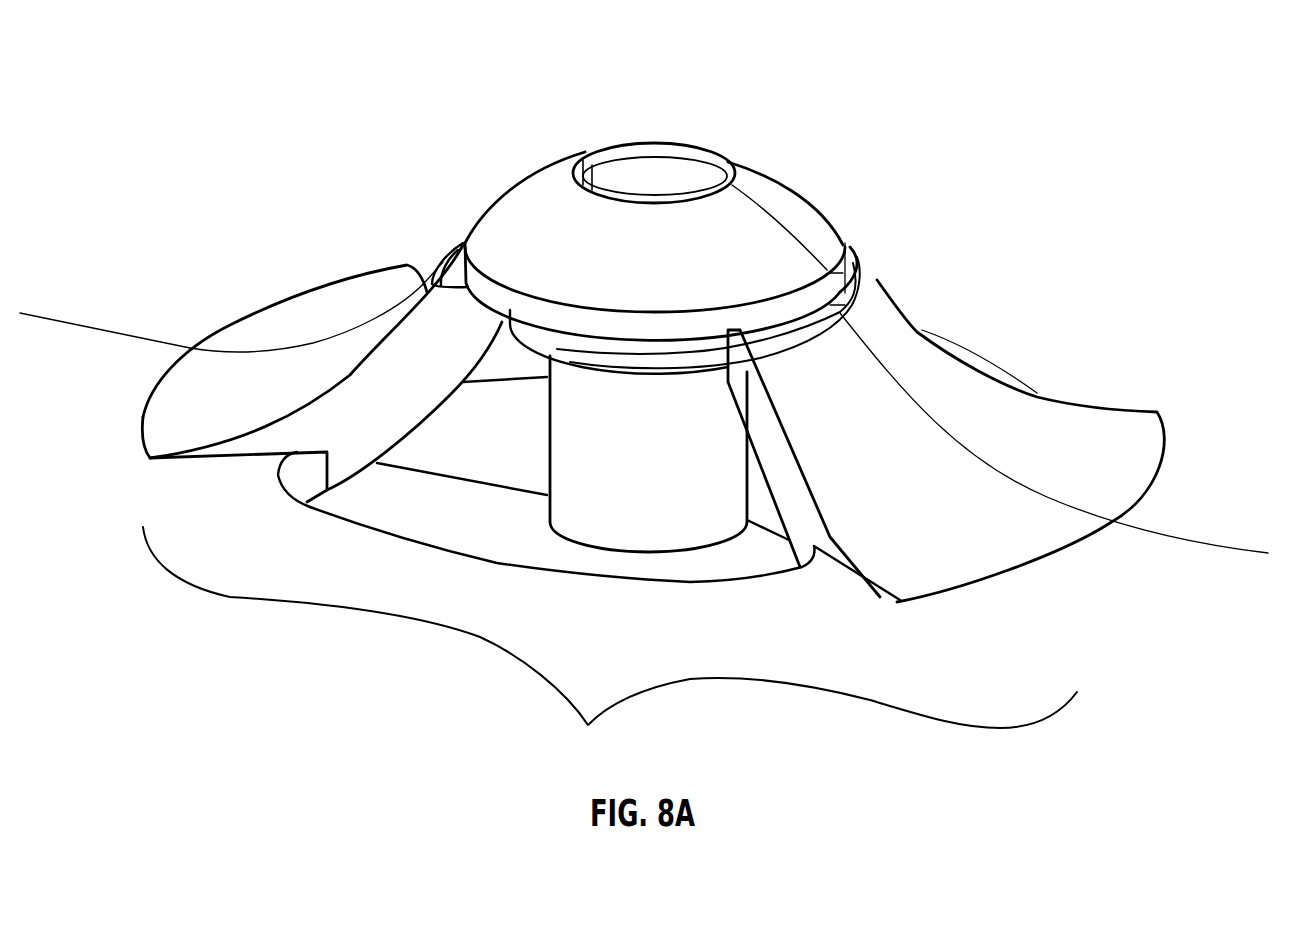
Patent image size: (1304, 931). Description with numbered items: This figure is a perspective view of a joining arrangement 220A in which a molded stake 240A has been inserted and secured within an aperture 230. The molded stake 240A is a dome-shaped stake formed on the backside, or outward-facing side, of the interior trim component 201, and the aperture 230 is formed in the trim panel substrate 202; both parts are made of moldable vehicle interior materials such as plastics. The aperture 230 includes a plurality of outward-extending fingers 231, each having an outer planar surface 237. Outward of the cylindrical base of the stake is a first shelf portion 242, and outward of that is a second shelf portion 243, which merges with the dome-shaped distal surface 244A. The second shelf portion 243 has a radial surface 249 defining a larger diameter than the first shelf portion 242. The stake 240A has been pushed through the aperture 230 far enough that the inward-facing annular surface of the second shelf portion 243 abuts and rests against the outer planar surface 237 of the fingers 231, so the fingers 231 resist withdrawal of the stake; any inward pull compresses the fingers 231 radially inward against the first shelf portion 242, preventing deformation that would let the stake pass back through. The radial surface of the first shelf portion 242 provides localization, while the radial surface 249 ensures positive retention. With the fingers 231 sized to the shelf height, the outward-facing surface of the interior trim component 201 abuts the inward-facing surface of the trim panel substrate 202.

The interior trim component 201 is at (462, 526).
The trim panel substrate 202 is at (1255, 592).
The joining arrangement 220A is at (653, 322).
The aperture 230 is at (610, 651).
The fingers 231 is at (353, 308).
The outer planar surface 237 is at (458, 253).
The molded stake 240A is at (714, 329).
The first shelf portion 242 is at (666, 382).
The second shelf portion 243 is at (612, 340).
The distal surface 244A is at (542, 182).
The radial surface 249 is at (863, 267).